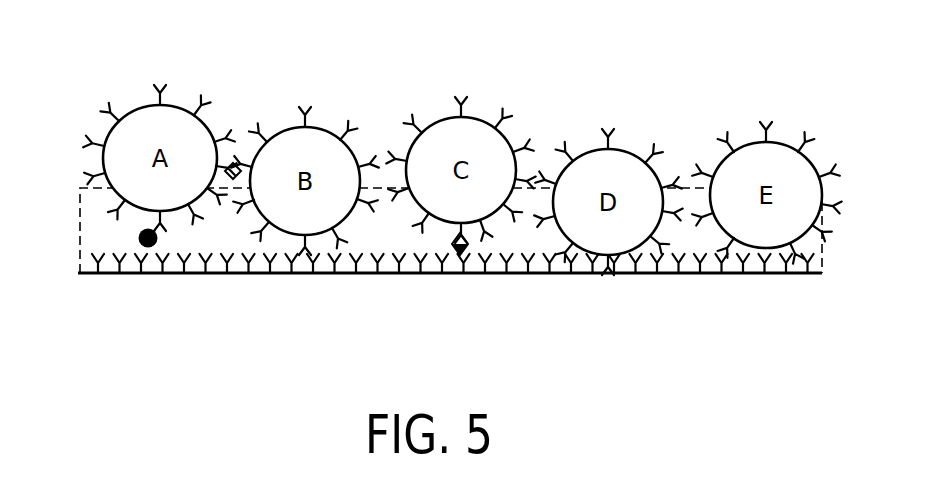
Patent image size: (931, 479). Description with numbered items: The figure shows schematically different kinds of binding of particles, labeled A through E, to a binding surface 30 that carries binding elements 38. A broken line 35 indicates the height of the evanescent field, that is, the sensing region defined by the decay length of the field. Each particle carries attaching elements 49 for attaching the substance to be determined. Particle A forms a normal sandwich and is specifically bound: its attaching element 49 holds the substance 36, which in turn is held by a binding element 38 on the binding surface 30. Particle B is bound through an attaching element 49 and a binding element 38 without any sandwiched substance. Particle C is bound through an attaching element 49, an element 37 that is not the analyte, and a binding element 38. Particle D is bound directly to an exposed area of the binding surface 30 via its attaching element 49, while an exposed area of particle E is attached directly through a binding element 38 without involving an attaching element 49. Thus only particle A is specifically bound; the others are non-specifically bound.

The binding surface 30 is at (542, 284).
The broken line 35 is at (78, 234).
The substance 36 is at (149, 248).
The element not being the substance 37 is at (453, 246).
The binding element 38 is at (822, 276).
The attaching element 49 is at (167, 91).